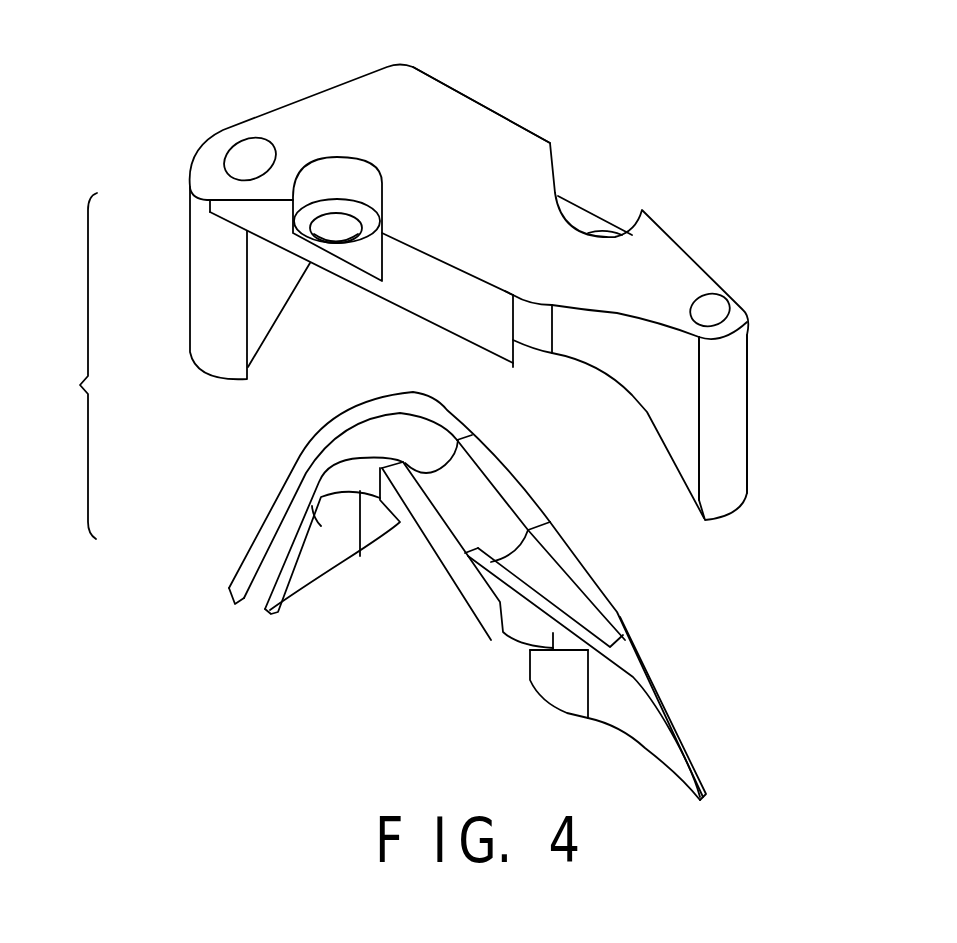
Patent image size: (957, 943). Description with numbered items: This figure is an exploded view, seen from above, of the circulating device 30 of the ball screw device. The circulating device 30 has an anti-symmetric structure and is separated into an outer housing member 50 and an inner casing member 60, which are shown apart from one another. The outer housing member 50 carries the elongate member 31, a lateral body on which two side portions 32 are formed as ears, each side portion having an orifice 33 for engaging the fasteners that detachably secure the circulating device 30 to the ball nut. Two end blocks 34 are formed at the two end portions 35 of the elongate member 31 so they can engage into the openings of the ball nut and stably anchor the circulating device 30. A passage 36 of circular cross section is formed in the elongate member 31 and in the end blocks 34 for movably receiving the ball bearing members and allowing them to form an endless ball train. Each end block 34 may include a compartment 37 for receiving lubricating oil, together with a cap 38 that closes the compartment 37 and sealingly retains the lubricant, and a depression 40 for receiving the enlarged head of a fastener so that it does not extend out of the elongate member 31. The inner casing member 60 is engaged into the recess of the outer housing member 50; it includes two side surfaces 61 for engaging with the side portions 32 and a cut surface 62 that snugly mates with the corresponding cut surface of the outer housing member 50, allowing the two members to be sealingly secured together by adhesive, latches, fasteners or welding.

The circulating device 30 is at (845, 195).
The outer housing member 50 is at (377, 97).
The elongate member 31 is at (483, 328).
The side portions 32 is at (493, 127).
The orifice 33 is at (335, 232).
The end blocks 34 is at (742, 449).
The end portions 35 is at (746, 367).
The passage 36 is at (585, 610).
The compartment 37 is at (728, 310).
The cap 38 is at (713, 303).
The depression 40 is at (587, 200).
The inner casing member 60 is at (296, 461).
The side surfaces 61 is at (452, 566).
The cut surface 62 is at (360, 460).